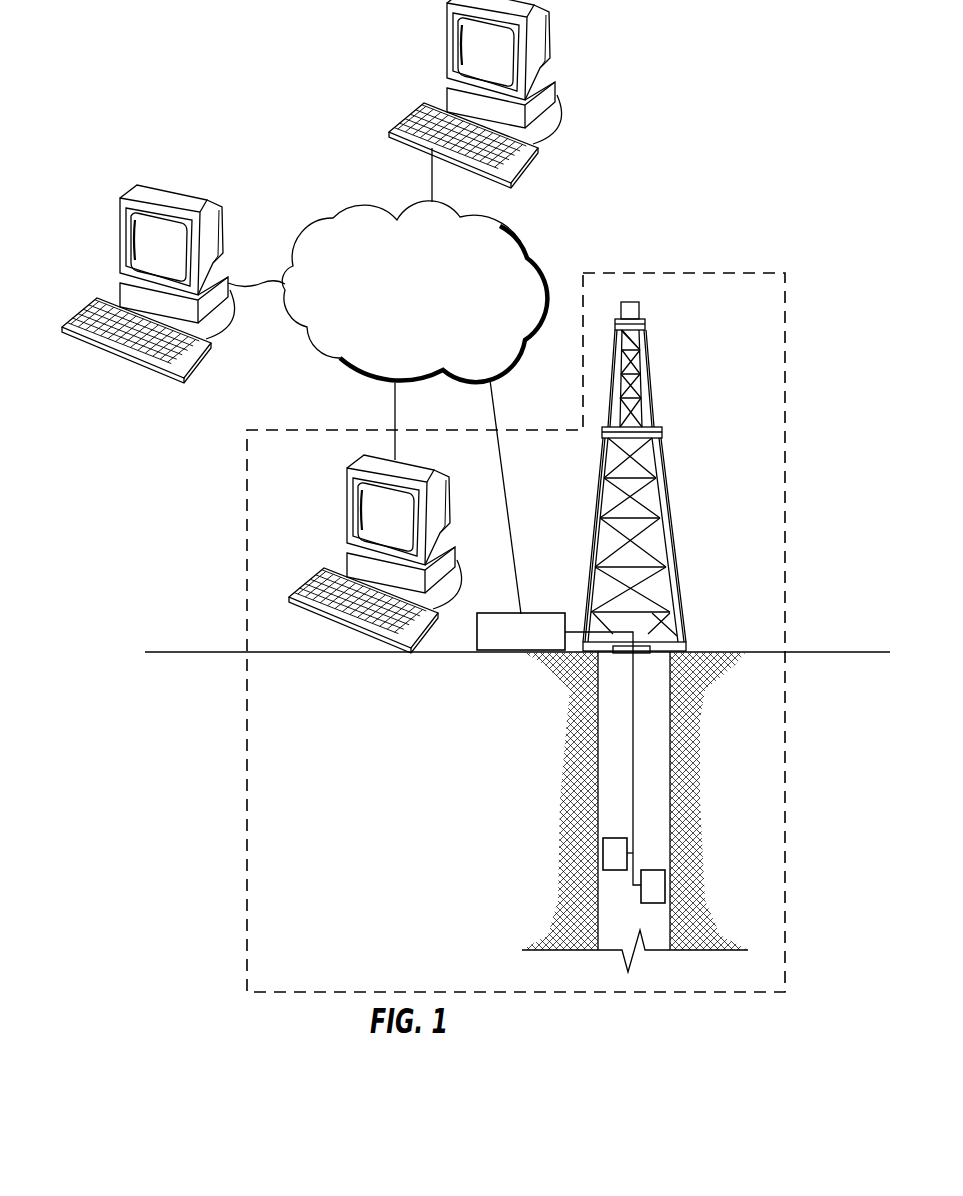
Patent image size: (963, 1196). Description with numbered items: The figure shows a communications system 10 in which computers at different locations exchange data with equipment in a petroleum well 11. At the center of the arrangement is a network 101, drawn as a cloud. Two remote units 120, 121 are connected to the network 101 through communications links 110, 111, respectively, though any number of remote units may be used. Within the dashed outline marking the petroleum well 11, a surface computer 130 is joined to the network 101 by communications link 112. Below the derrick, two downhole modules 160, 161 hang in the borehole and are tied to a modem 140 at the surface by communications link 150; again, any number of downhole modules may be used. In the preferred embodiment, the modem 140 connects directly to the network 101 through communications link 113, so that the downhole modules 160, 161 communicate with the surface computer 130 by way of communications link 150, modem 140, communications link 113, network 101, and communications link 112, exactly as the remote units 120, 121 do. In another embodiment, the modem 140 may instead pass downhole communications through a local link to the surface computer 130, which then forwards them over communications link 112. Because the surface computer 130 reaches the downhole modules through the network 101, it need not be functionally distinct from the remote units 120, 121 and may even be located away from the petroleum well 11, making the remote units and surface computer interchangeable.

The system 10 is at (728, 212).
The petroleum well 11 is at (785, 320).
The network 101 is at (527, 255).
The communications link 110 is at (262, 292).
The communications link 111 is at (428, 183).
The communications link 112 is at (393, 420).
The communications link 113 is at (497, 410).
The remote unit 120 is at (120, 235).
The remote unit 121 is at (445, 38).
The surface computer 130 is at (345, 513).
The modem 140 is at (520, 613).
The communications link 150 is at (634, 763).
The downhole module 160 is at (603, 853).
The downhole module 161 is at (665, 885).